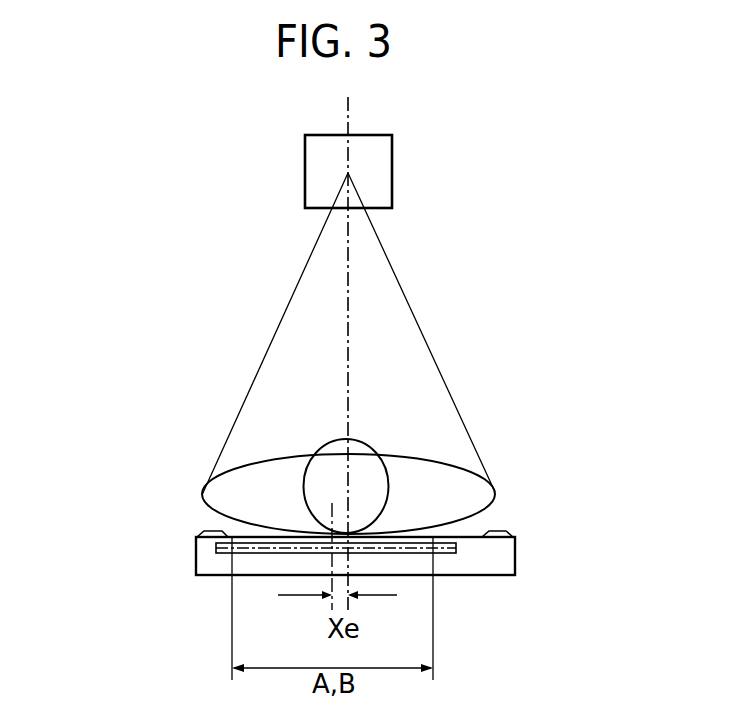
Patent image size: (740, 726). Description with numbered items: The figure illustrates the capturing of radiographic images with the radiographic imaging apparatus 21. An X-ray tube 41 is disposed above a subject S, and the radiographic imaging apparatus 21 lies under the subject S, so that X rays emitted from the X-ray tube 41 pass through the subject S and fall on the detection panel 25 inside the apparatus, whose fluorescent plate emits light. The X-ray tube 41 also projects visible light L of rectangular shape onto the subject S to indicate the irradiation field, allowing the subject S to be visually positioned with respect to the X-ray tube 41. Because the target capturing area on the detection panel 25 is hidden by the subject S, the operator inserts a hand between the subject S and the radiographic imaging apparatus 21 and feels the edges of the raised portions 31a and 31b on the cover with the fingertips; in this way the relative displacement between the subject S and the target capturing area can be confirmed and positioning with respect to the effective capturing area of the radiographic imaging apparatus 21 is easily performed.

The X-ray tube 41 is at (318, 172).
The visible light L is at (395, 272).
The subject S is at (442, 478).
The radiographic imaging apparatus 21 is at (500, 570).
The detection panel 25 is at (448, 555).
The raised portion 31a is at (210, 530).
The raised portion 31b is at (497, 531).